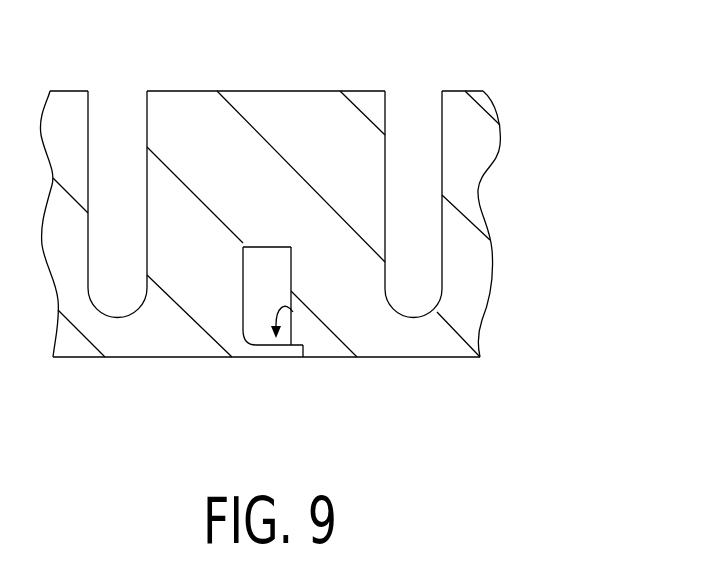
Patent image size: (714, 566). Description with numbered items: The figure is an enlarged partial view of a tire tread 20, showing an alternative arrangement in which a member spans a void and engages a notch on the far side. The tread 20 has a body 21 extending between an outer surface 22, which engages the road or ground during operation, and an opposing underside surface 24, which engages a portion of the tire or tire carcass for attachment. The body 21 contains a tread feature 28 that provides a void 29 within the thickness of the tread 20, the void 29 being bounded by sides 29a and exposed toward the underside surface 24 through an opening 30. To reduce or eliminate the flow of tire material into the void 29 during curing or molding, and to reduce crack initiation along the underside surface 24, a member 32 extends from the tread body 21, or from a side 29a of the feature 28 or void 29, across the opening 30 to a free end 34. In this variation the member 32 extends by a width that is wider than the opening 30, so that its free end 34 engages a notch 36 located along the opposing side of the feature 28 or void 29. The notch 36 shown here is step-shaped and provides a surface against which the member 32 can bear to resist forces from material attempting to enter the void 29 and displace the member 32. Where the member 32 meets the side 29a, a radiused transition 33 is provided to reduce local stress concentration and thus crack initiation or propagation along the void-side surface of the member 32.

The tread 20 is at (568, 150).
The body 21 is at (477, 277).
The outer surface 22 is at (314, 90).
The underside surface 24 is at (456, 358).
The tread feature 28 is at (270, 247).
The void 29 is at (257, 265).
The side of void 29a is at (243, 276).
The opening 30 is at (293, 312).
The member 32 is at (303, 427).
The transition 33 is at (250, 334).
The free end 34 is at (292, 348).
The notch 36 is at (306, 346).